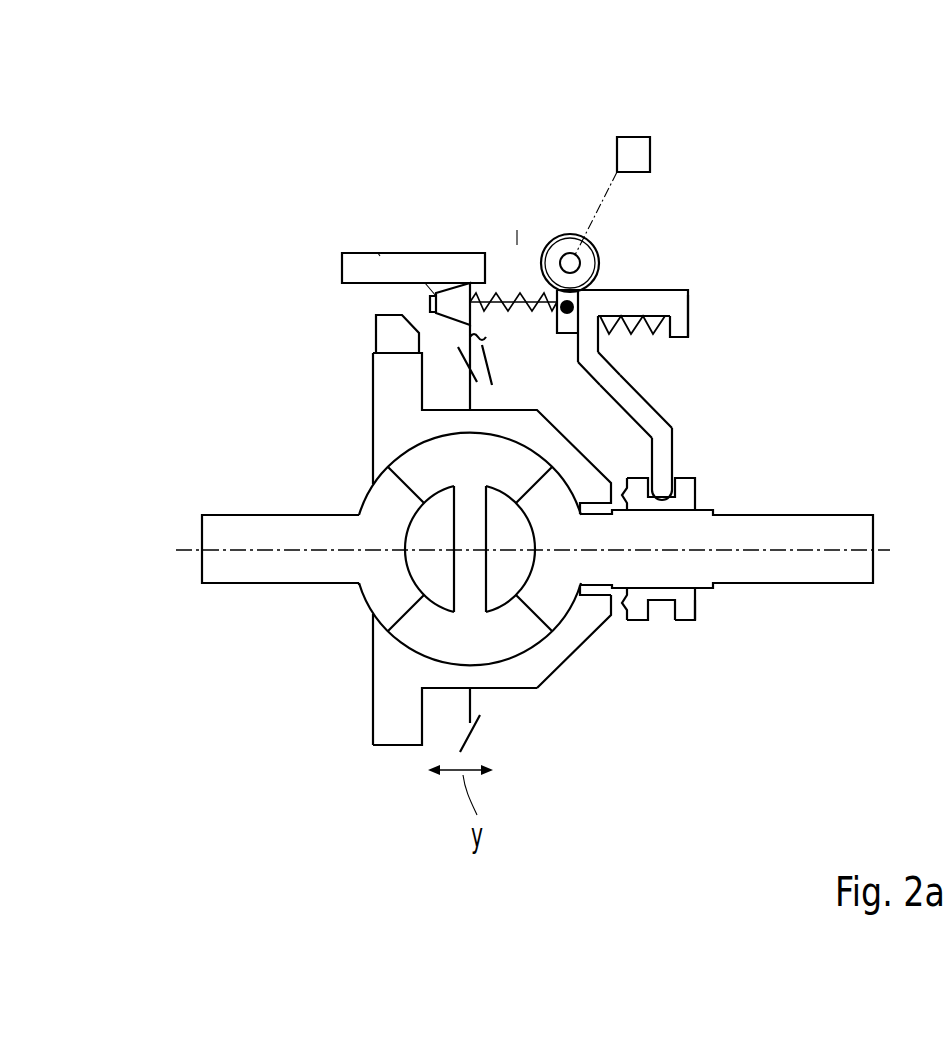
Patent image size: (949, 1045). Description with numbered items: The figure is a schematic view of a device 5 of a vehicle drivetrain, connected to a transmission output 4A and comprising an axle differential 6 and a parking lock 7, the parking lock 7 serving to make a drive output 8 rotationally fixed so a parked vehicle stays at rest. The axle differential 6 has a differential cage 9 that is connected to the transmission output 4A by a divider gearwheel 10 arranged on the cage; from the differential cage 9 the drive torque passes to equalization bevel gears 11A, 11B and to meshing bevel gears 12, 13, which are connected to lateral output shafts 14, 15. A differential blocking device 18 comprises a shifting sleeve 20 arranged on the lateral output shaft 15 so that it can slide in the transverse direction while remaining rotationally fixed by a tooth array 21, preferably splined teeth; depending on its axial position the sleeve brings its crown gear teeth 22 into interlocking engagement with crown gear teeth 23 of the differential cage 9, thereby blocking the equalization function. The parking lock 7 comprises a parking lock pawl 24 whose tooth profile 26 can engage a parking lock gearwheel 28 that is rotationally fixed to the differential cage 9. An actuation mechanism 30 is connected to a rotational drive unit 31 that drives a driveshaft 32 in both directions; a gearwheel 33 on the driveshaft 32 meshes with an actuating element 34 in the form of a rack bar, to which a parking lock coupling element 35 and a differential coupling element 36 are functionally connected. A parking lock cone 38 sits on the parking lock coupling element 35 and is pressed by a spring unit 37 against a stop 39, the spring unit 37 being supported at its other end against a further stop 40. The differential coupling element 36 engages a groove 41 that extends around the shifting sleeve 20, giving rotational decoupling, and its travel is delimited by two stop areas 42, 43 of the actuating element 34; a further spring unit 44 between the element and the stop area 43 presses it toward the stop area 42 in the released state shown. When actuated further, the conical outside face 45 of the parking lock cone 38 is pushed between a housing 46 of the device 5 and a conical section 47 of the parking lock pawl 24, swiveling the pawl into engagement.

The transmission output 4A is at (494, 356).
The device 5 is at (517, 252).
The axle differential 6 is at (499, 690).
The parking lock 7 is at (368, 351).
The drive output 8 is at (300, 585).
The differential cage 9 is at (545, 657).
The divider gearwheel 10 is at (462, 738).
The equalization bevel gear 11A is at (432, 630).
The equalization bevel gear 11B is at (423, 468).
The bevel gear 12 is at (387, 585).
The bevel gear 13 is at (555, 595).
The lateral output shaft 14 is at (247, 566).
The lateral output shaft 15 is at (807, 567).
The differential blocking device 18 is at (685, 477).
The shifting sleeve 20 is at (683, 612).
The tooth array 21 is at (703, 590).
The crown gear teeth 22 is at (660, 608).
The crown gear teeth 23 is at (616, 620).
The parking lock pawl 24 is at (393, 332).
The tooth profile 26 is at (393, 350).
The parking lock gearwheel 28 is at (397, 389).
The actuation mechanism 30 is at (689, 306).
The rotational drive unit 31 is at (634, 153).
The driveshaft 32 is at (572, 264).
The gearwheel 33 is at (568, 234).
The actuating element 34 is at (690, 290).
The parking lock coupling element 35 is at (525, 303).
The differential coupling element 36 is at (662, 452).
The spring unit 37 is at (492, 303).
The parking lock cone 38 is at (458, 253).
The stop 39 is at (378, 253).
The further stop 40 is at (534, 332).
The groove 41 is at (686, 618).
The stop area 42 is at (598, 385).
The stop area 43 is at (672, 328).
The further spring unit 44 is at (645, 337).
The conical outside face 45 is at (420, 253).
The housing 46 is at (360, 268).
The conical section 47 is at (405, 312).